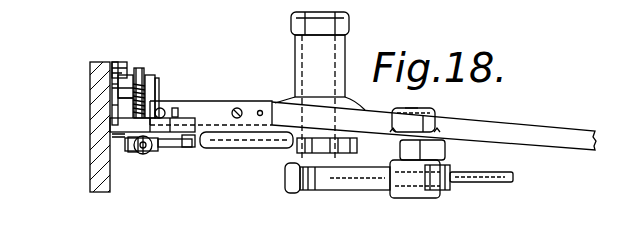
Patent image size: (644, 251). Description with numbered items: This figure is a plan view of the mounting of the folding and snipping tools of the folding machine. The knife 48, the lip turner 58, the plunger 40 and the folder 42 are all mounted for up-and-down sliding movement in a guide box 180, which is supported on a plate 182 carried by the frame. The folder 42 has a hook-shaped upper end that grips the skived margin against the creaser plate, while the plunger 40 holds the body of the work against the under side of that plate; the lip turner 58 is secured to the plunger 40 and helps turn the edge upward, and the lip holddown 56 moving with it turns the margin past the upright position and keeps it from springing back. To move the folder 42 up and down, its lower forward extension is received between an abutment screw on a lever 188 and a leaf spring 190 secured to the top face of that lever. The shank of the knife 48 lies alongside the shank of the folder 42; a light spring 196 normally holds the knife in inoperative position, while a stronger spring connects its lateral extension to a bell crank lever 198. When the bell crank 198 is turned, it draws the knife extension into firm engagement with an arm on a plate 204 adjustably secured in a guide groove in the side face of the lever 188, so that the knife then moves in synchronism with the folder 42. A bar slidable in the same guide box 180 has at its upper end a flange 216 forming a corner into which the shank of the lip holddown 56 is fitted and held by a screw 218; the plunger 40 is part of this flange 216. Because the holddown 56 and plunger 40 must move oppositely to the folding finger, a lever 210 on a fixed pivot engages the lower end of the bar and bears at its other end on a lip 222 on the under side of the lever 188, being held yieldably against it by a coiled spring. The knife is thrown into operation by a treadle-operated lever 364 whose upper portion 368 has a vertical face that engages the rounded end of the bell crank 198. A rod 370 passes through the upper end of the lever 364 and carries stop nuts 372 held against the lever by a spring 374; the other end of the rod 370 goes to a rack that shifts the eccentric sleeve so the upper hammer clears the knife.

The plunger 40 is at (140, 78).
The folder 42 is at (158, 108).
The knife blade 48 is at (146, 86).
The lip holddown 56 is at (112, 128).
The lip turner 58 is at (114, 97).
The guide box 180 is at (124, 88).
The plate 182 is at (90, 103).
The lever 188 is at (425, 123).
The leaf spring 190 is at (211, 112).
The light spring 196 is at (147, 156).
The bell crank lever 198 is at (318, 152).
The plate 204 is at (206, 135).
The lever 210 is at (290, 101).
The flange 216 is at (130, 128).
The screw 218 is at (114, 105).
The lip 222 is at (412, 109).
The treadle-operated lever 364 is at (400, 194).
The portion 368 is at (446, 152).
The rod 370 is at (503, 181).
The stop nuts 372 is at (441, 188).
The spring 374 is at (372, 188).